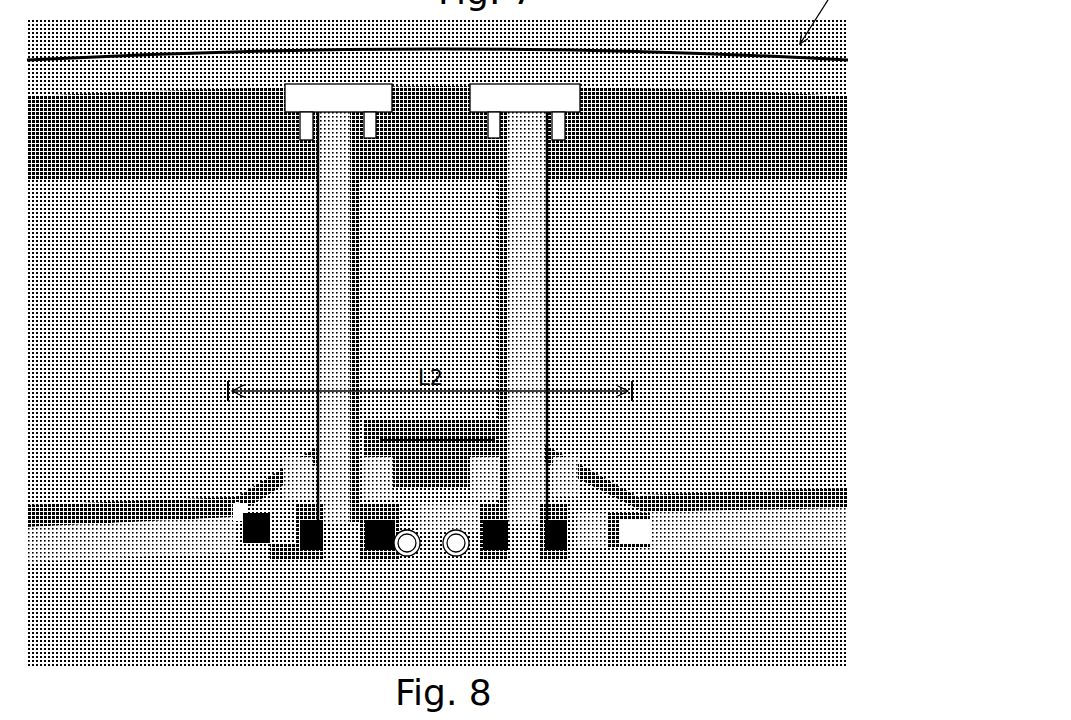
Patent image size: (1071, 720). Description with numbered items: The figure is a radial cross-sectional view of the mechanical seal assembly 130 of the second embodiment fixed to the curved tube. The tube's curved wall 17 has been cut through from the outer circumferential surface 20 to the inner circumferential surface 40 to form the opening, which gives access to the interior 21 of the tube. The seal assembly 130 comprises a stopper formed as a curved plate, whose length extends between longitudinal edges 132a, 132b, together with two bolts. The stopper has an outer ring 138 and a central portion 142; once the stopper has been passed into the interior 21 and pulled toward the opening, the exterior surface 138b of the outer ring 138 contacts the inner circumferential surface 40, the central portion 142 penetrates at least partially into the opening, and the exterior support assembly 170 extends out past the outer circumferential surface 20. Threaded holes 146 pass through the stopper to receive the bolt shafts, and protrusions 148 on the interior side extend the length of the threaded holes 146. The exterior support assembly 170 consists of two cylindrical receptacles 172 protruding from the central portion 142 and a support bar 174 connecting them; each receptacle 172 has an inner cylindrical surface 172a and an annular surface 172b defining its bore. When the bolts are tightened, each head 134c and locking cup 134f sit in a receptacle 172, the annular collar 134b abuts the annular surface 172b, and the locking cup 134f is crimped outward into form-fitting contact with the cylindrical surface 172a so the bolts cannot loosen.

The curved wall 17 is at (187, 527).
The outer circumferential surface 20 is at (724, 565).
The interior 21 is at (700, 250).
The inner circumferential surface 40 is at (738, 502).
The mechanical seal assembly 130 is at (201, 634).
The longitudinal edge 132a is at (233, 507).
The longitudinal edge 132b is at (640, 500).
The annular collar 134b is at (556, 560).
The head 134c is at (361, 567).
The locking cup 134f is at (310, 560).
The outer ring 138 is at (236, 524).
The exterior surface 138b is at (250, 510).
The central portion 142 is at (271, 537).
The threaded hole 146 is at (372, 465).
The protrusion 148 is at (486, 443).
The exterior support assembly 170 is at (457, 572).
The receptacle 172 is at (585, 540).
The inner cylindrical surface 172a is at (470, 540).
The annular surface 172b is at (610, 473).
The support bar 174 is at (432, 563).